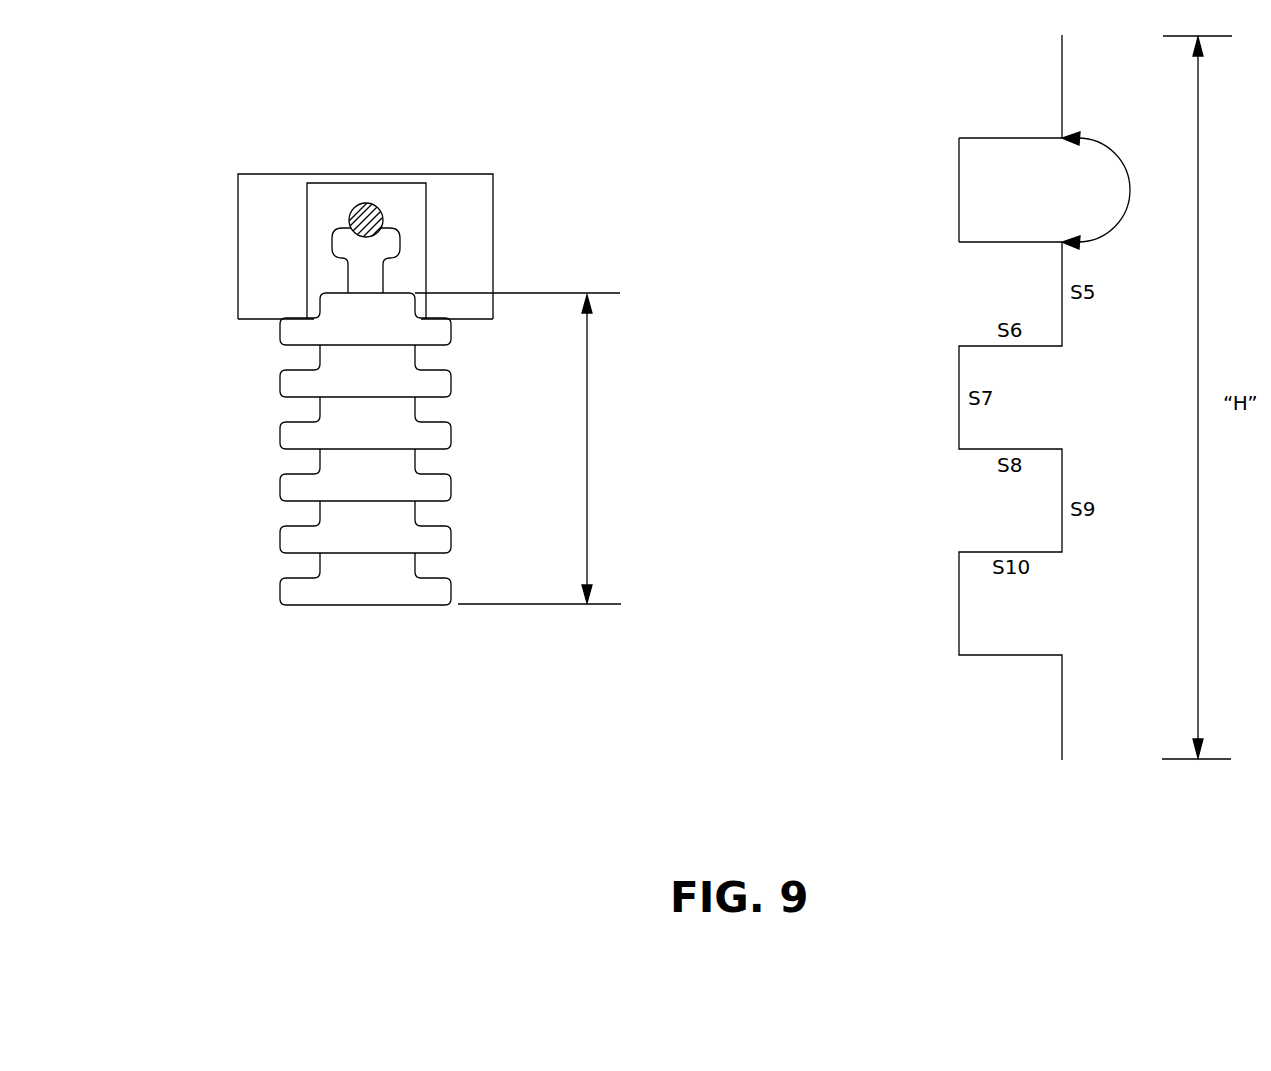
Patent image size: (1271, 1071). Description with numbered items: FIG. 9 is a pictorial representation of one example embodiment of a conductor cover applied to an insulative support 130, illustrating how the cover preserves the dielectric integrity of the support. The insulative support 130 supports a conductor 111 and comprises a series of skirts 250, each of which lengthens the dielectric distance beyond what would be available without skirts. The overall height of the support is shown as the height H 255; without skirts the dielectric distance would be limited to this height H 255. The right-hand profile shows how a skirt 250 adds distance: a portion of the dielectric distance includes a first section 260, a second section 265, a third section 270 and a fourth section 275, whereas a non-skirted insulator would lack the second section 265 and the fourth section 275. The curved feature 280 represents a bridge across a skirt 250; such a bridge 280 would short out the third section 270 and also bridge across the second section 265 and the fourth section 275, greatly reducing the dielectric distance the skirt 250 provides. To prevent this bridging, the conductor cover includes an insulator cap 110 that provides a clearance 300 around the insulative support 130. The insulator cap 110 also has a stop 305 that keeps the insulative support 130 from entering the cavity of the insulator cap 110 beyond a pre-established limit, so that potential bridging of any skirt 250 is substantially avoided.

The insulator cap 110 is at (476, 174).
The conductor 111 is at (366, 203).
The insulative support 130 is at (452, 587).
The skirt 250 is at (452, 484).
The height H 255 is at (588, 359).
The section S1 260 is at (1060, 44).
The section S2 265 is at (975, 138).
The section S3 270 is at (959, 164).
The section S4 275 is at (969, 244).
The bridge 280 is at (1113, 189).
The clearance 300 is at (348, 452).
The stop 305 is at (258, 318).